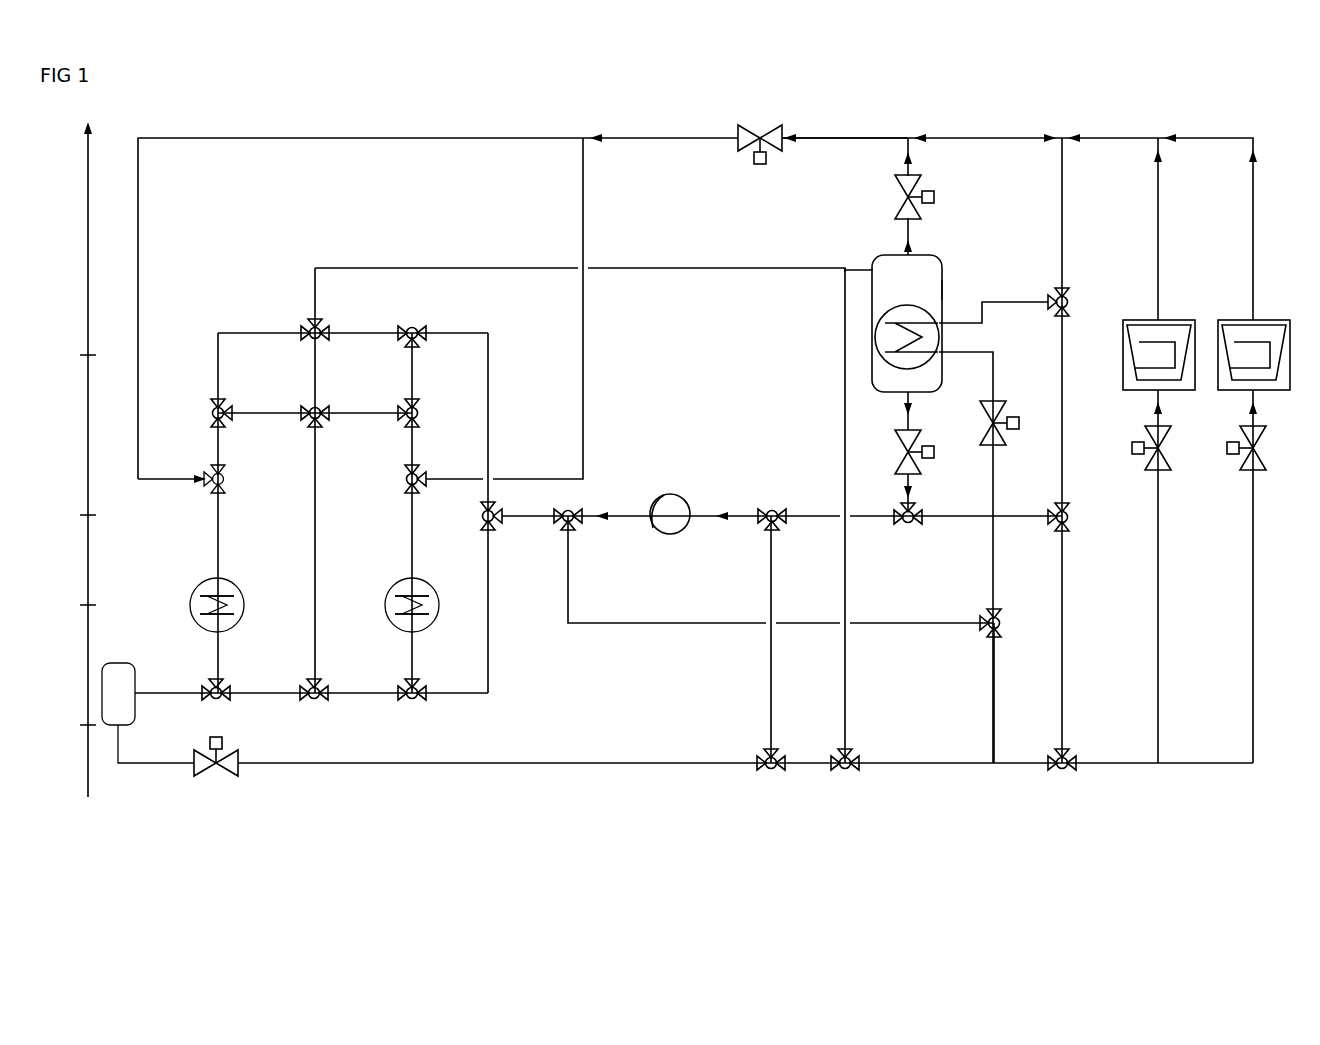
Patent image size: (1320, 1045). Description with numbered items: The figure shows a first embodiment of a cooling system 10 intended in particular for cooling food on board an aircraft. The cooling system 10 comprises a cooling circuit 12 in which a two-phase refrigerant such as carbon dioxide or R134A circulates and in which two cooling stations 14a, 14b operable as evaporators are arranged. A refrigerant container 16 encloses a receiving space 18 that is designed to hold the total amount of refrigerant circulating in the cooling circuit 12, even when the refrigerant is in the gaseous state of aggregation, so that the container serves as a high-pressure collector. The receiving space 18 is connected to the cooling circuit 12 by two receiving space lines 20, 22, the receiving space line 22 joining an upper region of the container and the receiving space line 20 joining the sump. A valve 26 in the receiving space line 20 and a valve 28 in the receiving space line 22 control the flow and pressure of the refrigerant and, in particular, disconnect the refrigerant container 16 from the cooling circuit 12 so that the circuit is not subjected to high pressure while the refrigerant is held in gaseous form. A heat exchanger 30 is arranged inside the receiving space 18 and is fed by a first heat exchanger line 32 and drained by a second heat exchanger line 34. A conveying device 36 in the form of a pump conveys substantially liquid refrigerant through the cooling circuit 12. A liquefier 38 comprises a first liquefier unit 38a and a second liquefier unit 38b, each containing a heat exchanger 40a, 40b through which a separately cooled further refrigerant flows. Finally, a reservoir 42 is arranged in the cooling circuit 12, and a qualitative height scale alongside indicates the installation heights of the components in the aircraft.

The cooling system 10 is at (672, 445).
The cooling circuit 12 is at (840, 137).
The cooling station 14a is at (1170, 320).
The cooling station 14b is at (1267, 320).
The refrigerant container 16 is at (940, 256).
The receiving space 18 is at (872, 272).
The receiving space line 20 is at (916, 490).
The receiving space line 22 is at (914, 178).
The valve 26 is at (922, 460).
The valve 28 is at (896, 190).
The heat exchanger 30 is at (942, 290).
The first heat exchanger line 32 is at (920, 322).
The second heat exchanger line 34 is at (1020, 302).
The conveying device 36 is at (674, 494).
The liquefier 38 is at (168, 510).
The first liquefier unit 38a is at (191, 607).
The second liquefier unit 38b is at (386, 607).
The heat exchanger 40a is at (232, 581).
The heat exchanger 40b is at (428, 581).
The reservoir 42 is at (110, 733).